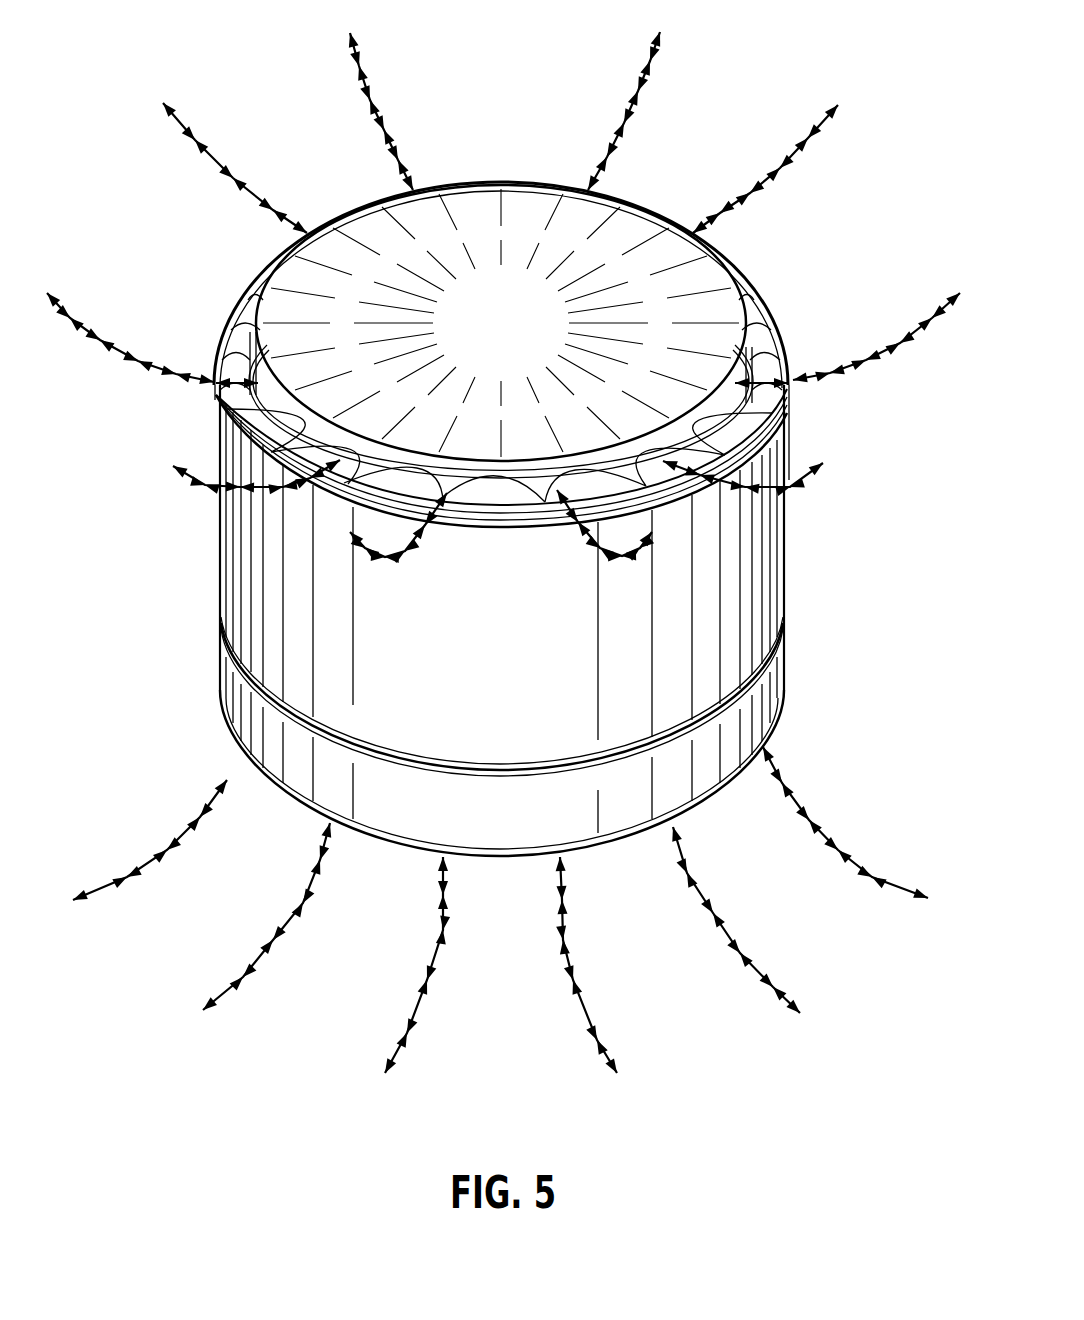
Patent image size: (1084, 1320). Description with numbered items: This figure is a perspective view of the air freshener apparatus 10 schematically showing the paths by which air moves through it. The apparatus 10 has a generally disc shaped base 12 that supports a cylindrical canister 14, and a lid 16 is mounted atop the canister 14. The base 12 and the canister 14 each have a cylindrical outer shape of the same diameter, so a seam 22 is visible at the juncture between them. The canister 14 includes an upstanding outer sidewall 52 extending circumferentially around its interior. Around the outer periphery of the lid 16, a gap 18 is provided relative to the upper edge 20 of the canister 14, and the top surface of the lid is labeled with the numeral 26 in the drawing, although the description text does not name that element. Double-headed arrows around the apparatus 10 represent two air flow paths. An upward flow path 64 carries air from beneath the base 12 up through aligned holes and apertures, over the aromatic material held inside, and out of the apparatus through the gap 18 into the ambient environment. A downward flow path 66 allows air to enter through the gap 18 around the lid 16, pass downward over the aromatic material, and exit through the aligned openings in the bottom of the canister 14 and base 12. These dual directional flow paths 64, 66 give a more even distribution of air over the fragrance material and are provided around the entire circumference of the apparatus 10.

The air freshener apparatus 10 is at (505, 461).
The base 12 is at (791, 677).
The canister 14 is at (791, 563).
The lid 16 is at (637, 193).
The gap 18 is at (734, 389).
The upper edge 20 is at (770, 315).
The seam 22 is at (241, 667).
The top panel 26 is at (511, 320).
The outer sidewall 52 is at (481, 650).
The upward flow path 64 is at (377, 121).
The downward flow path 66 is at (226, 167).